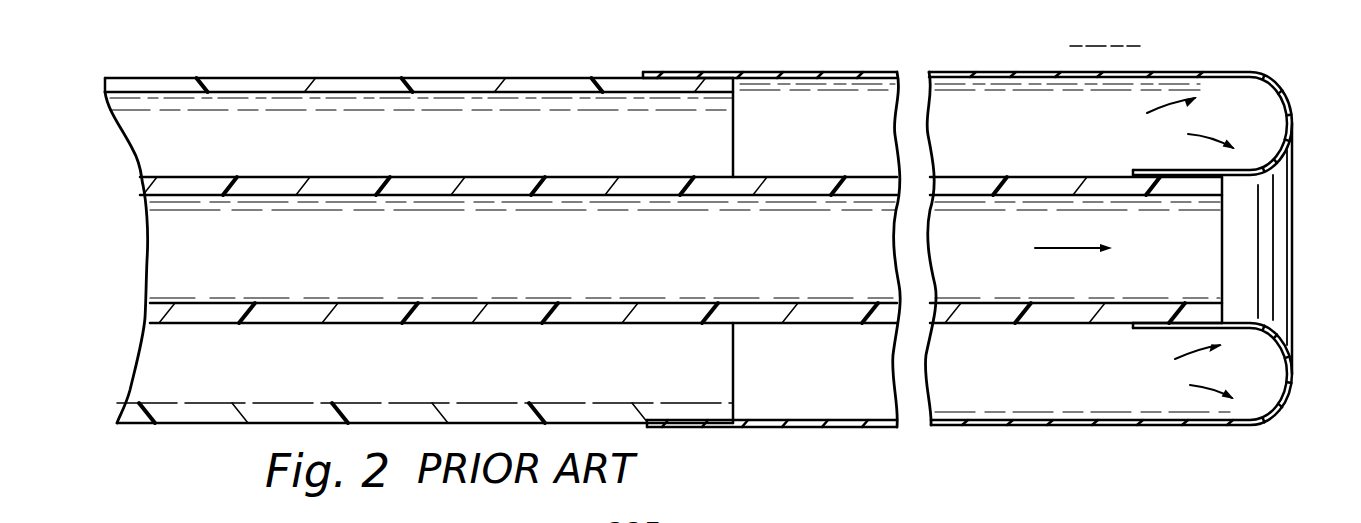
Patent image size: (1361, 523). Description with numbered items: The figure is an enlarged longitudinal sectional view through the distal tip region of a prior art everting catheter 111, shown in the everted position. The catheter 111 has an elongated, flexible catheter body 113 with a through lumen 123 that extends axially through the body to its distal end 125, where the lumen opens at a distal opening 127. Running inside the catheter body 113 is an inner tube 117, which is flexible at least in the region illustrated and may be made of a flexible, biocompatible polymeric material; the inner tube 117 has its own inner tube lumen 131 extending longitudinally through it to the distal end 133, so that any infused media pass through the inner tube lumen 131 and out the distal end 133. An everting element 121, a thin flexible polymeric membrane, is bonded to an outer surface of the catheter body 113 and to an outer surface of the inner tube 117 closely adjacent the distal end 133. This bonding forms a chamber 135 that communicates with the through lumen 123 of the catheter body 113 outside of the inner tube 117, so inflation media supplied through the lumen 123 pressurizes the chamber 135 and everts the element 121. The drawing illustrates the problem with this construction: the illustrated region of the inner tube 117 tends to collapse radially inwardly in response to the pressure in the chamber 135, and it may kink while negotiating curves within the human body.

The prior art catheter 111 is at (694, 278).
The catheter body 113 is at (137, 92).
The inner tube 117 is at (178, 190).
The everting element 121 is at (1170, 63).
The through lumen 123 is at (170, 118).
The distal end 125 is at (745, 84).
The distal opening 127 is at (695, 150).
The inner tube lumen 131 is at (175, 265).
The distal end 133 is at (1233, 313).
The chamber 135 is at (1082, 140).